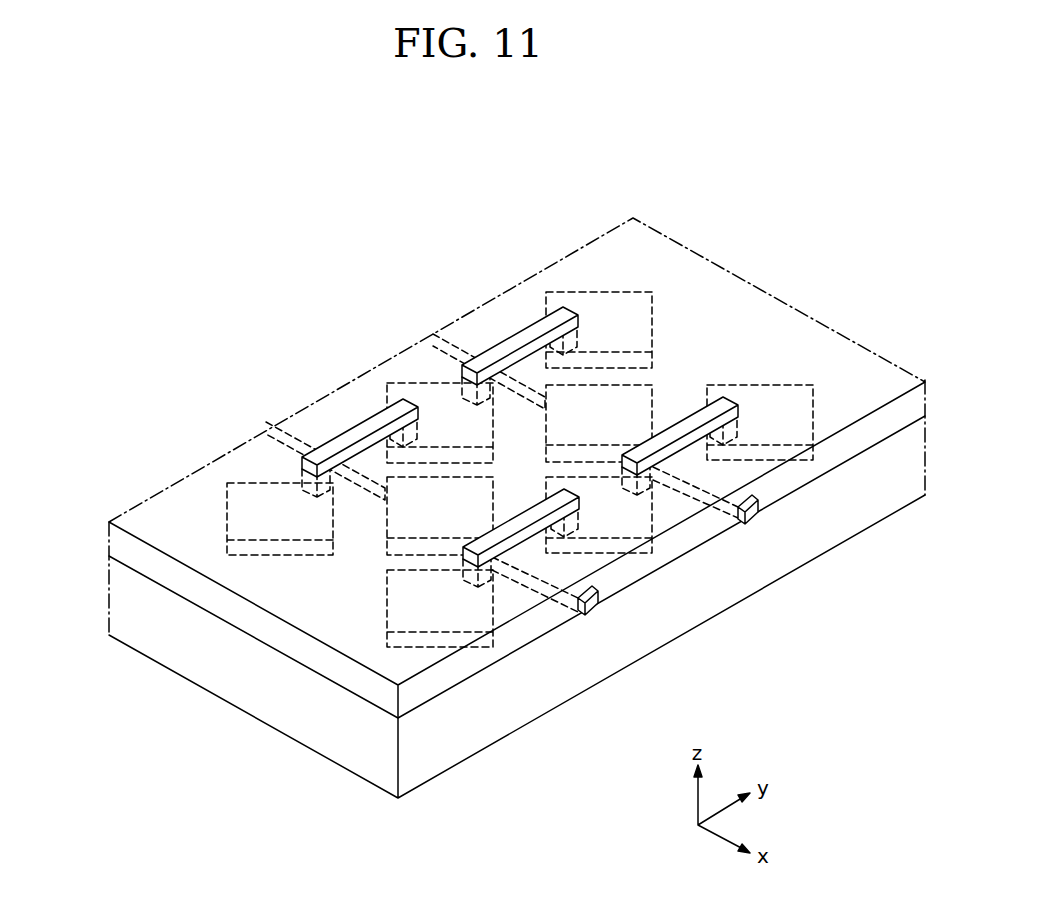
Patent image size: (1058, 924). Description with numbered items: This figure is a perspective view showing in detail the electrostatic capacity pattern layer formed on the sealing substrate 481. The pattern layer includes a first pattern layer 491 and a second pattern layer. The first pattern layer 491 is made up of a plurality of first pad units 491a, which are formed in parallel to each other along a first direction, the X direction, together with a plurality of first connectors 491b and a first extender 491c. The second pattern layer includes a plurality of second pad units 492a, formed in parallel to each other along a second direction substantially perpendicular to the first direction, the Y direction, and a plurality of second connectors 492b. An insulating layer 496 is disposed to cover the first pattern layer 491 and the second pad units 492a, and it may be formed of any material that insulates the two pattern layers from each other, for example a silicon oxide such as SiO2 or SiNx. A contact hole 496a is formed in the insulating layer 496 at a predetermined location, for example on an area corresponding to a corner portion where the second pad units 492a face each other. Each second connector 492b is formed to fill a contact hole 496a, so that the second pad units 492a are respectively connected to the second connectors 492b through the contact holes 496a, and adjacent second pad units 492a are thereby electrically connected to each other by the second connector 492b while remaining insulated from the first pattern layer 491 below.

The sealing substrate 481 is at (765, 565).
The insulating layer 496 is at (800, 478).
The contact hole 496a is at (413, 427).
The first pattern layer 491 is at (436, 590).
The first pad units 491a is at (400, 522).
The first connectors 491b is at (357, 477).
The first extender 491c is at (535, 585).
The second pad units 492a is at (237, 520).
The second connectors 492b is at (360, 427).